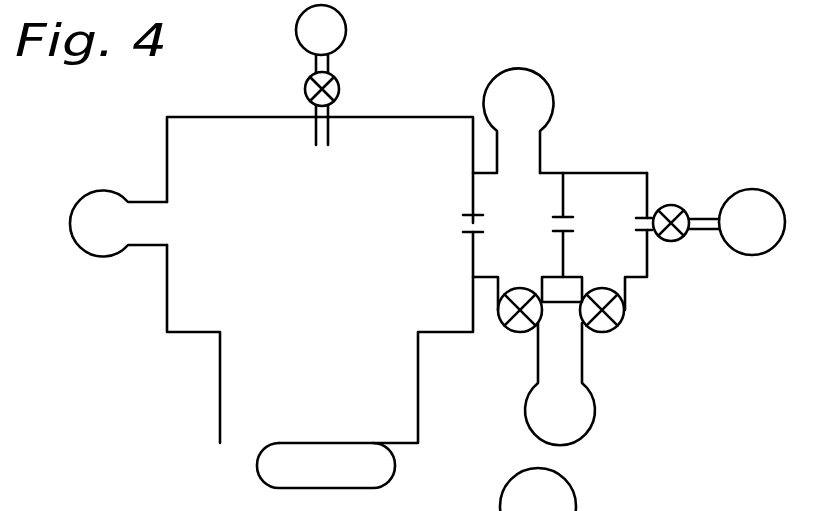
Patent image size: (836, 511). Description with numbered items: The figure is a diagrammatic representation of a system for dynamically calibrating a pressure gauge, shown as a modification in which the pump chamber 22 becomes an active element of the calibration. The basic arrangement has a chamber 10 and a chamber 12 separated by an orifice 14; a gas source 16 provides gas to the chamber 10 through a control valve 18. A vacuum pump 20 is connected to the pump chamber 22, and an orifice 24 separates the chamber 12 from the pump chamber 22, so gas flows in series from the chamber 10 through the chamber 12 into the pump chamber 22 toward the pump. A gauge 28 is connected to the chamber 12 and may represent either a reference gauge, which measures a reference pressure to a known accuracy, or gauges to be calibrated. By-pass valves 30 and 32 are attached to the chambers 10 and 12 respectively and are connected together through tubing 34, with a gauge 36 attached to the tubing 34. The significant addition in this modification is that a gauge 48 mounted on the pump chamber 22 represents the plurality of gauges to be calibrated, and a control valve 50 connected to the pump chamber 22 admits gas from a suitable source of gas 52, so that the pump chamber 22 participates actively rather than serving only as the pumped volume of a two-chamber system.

The chamber 10 is at (628, 187).
The chamber 12 is at (532, 185).
The orifice 14 is at (549, 227).
The gas source 16 is at (777, 180).
The control valve 18 is at (695, 194).
The vacuum pump 20 is at (368, 471).
The pump chamber 22 is at (213, 116).
The orifice 24 is at (468, 222).
The gauge 28 is at (552, 94).
The by-pass valve 30 is at (640, 333).
The by-pass valve 32 is at (517, 333).
The tubing 34 is at (562, 289).
The gauge 36 is at (578, 428).
The gauge 48 is at (97, 192).
The control valve 50 is at (340, 86).
The source of gas 52 is at (297, 26).